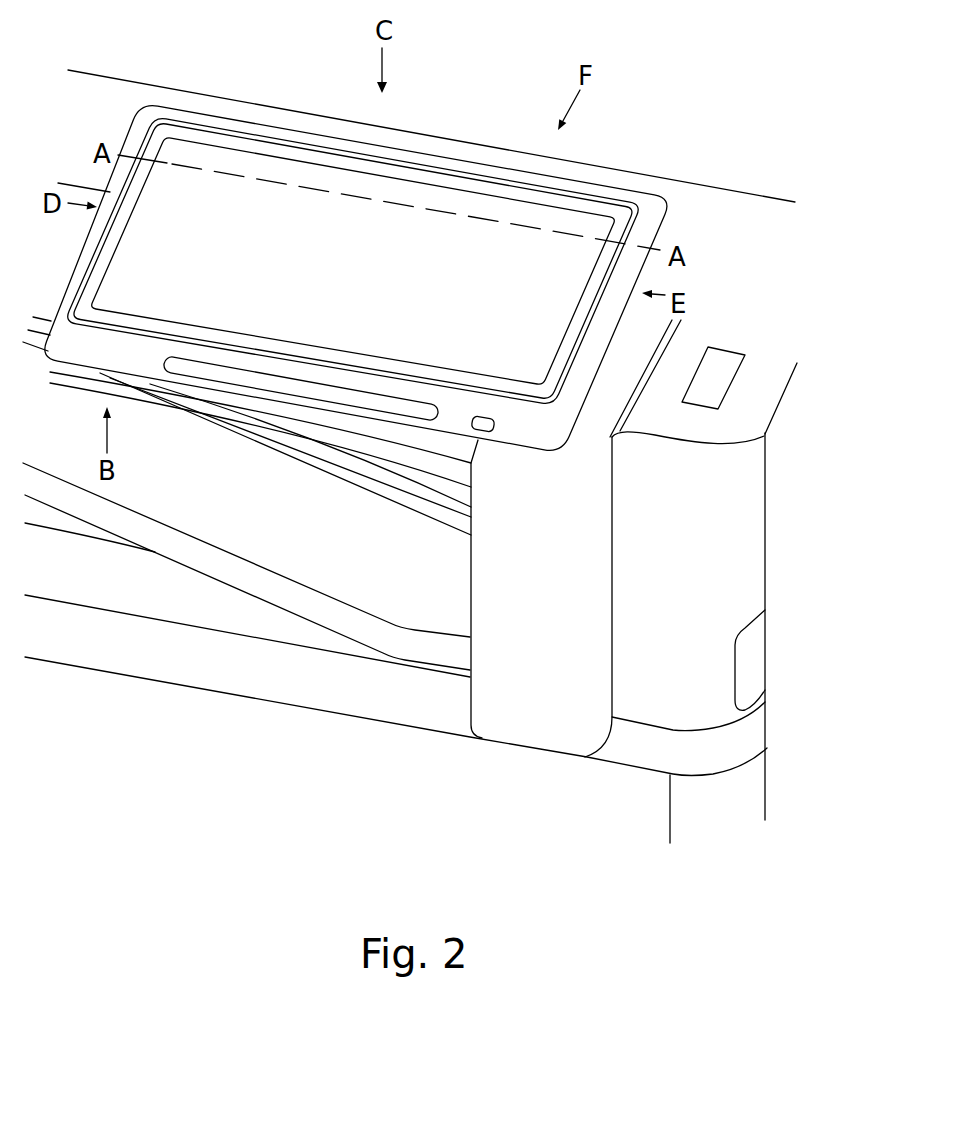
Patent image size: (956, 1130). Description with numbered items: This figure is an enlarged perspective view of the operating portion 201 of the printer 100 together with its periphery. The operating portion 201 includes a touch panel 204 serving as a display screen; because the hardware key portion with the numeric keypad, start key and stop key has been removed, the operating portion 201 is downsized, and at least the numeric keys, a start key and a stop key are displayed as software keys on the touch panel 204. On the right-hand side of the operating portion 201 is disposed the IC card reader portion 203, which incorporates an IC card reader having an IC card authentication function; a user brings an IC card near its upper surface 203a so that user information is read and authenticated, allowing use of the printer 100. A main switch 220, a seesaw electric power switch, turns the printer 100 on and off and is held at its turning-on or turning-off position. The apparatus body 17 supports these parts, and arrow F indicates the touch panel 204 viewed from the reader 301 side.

The reader 301 is at (102, 93).
The operating portion 201 is at (451, 100).
The touch panel 204 is at (285, 183).
The IC card reader portion 203 is at (735, 332).
The upper surface 203a is at (720, 388).
The main switch 220 is at (752, 658).
The apparatus body 17 is at (207, 515).
The printer 100 is at (258, 741).